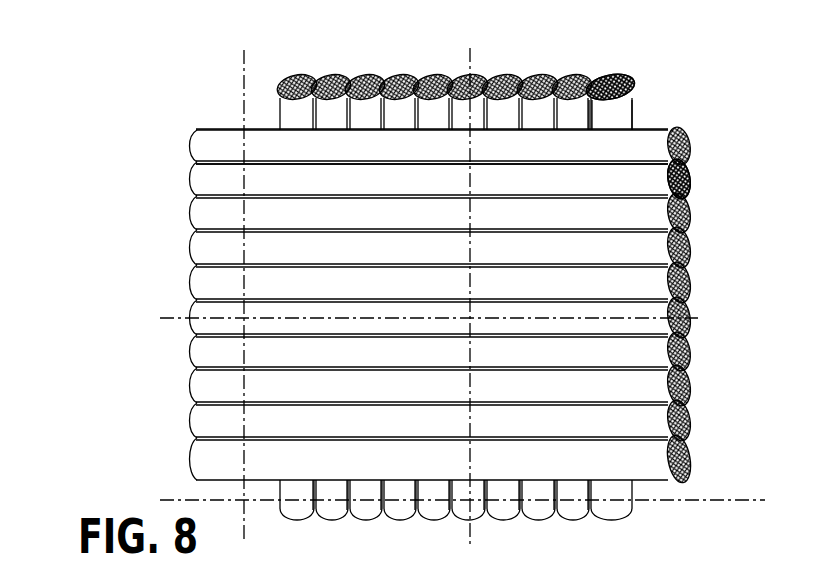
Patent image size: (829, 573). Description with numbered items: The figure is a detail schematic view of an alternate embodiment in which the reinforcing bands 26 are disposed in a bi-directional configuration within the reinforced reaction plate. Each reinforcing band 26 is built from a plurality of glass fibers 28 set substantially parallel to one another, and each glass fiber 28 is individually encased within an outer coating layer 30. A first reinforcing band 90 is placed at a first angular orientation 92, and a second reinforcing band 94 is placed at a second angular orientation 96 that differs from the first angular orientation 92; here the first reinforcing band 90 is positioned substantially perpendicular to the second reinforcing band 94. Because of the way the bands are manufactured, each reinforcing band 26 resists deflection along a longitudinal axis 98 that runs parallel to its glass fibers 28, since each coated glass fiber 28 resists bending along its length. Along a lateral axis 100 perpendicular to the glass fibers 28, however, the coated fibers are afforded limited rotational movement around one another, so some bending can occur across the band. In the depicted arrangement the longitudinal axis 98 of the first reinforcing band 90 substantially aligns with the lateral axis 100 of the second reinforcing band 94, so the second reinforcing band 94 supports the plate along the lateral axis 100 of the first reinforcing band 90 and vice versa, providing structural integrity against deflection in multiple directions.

The reinforcing band 26 is at (642, 448).
The glass fiber 28 is at (576, 88).
The outer coating layer 30 is at (602, 82).
The first reinforcing band 90 is at (648, 148).
The first angular orientation 92 is at (700, 420).
The second reinforcing band 94 is at (292, 112).
The second angular orientation 96 is at (400, 60).
The longitudinal axis 98 is at (470, 70).
The lateral axis 100 is at (243, 100).